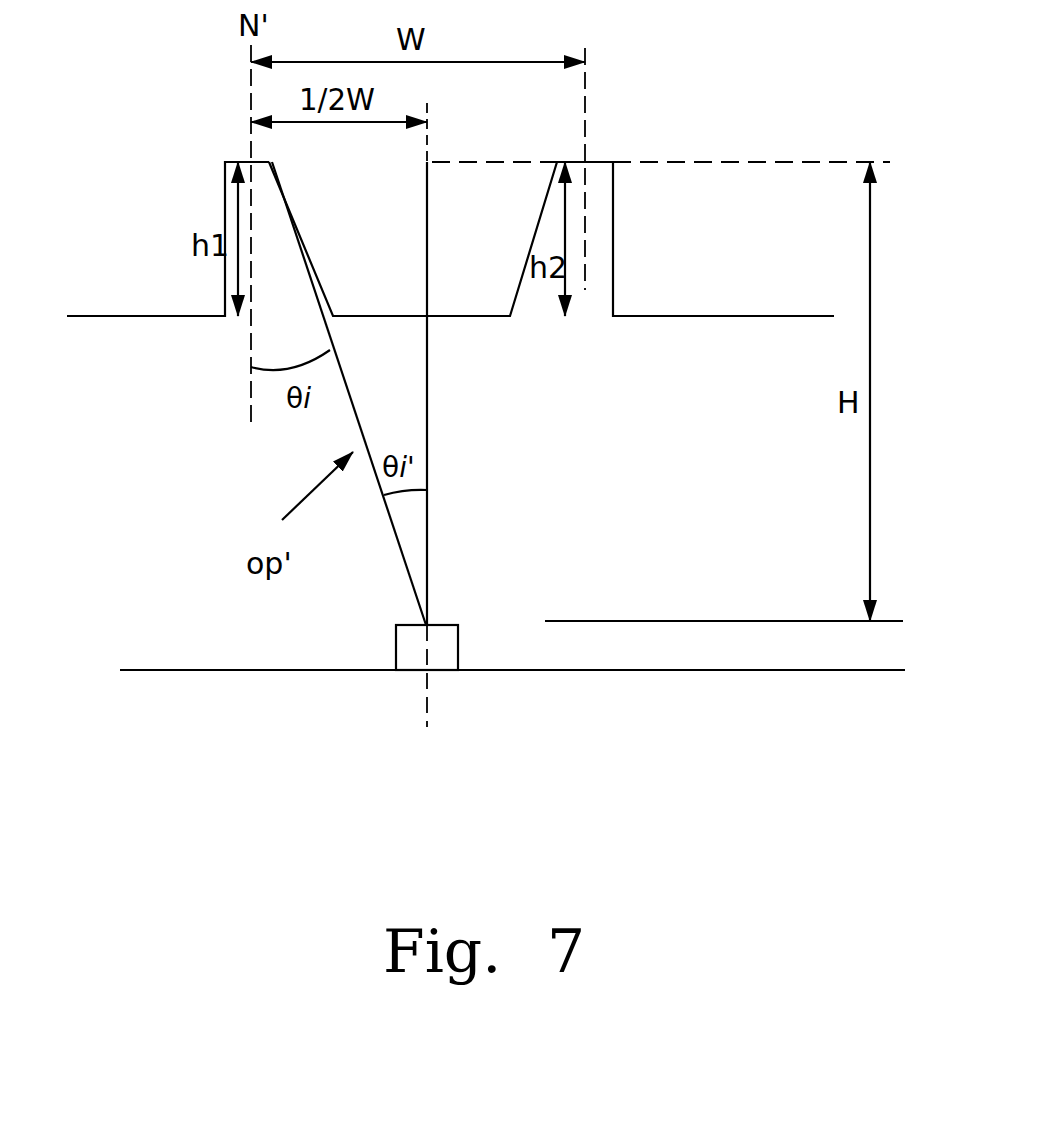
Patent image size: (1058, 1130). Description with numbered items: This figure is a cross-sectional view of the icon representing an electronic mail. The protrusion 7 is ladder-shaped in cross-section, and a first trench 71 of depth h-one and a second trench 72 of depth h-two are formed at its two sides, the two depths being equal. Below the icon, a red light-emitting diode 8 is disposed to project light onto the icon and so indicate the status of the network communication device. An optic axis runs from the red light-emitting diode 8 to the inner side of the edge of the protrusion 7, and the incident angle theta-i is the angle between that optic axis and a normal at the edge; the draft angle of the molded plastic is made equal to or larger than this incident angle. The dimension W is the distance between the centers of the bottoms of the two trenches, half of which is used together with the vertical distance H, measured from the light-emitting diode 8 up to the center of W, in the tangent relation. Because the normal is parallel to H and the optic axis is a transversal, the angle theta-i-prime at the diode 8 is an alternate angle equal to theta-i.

The protrusion 7 is at (473, 300).
The first trench 71 is at (277, 298).
The second trench 72 is at (585, 290).
The red light-emitting diode 8 is at (393, 650).